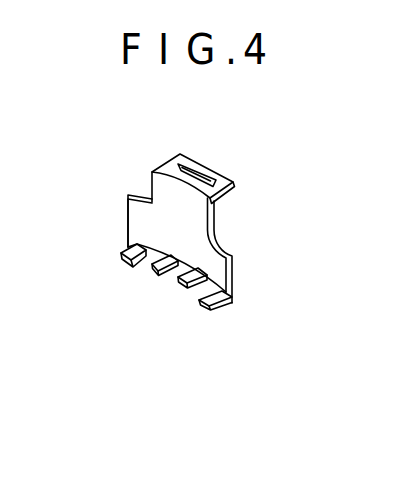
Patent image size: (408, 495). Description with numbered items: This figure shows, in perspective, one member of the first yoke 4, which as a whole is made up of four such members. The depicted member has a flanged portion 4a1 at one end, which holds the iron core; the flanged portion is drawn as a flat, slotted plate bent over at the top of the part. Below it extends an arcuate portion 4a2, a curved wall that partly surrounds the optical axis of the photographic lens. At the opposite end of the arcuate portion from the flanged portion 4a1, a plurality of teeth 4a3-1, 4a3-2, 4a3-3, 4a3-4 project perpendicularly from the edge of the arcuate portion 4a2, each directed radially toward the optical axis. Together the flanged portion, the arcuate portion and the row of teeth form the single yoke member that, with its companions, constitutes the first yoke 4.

The first yoke 4 is at (227, 225).
The flanged portion 4a1 is at (167, 165).
The arcuate portion 4a2 is at (135, 213).
The tooth 4a3-1 is at (125, 266).
The tooth 4a3-2 is at (156, 276).
The tooth 4a3-3 is at (180, 289).
The tooth 4a3-4 is at (201, 308).